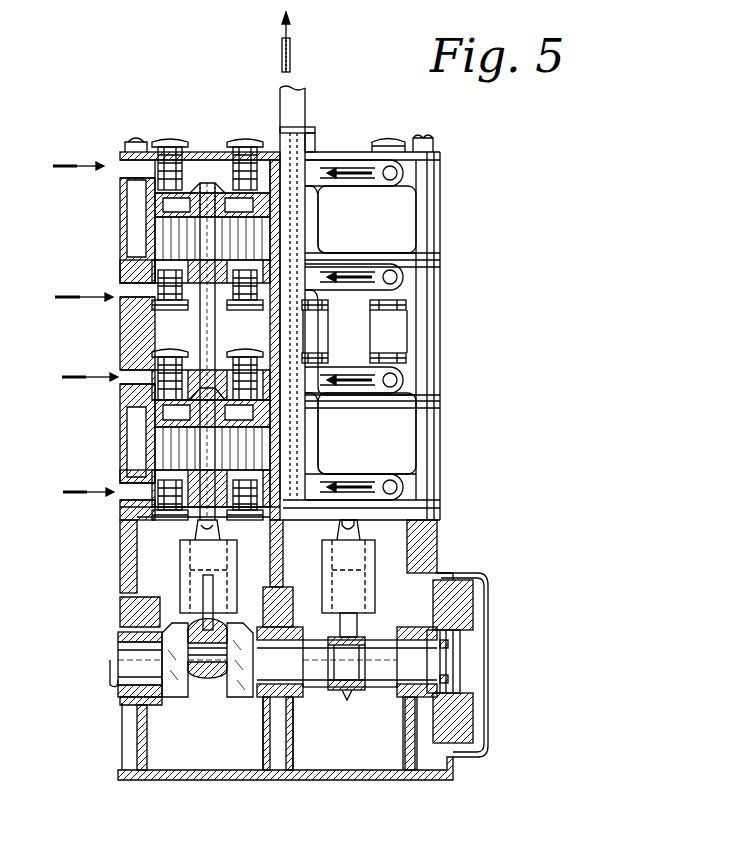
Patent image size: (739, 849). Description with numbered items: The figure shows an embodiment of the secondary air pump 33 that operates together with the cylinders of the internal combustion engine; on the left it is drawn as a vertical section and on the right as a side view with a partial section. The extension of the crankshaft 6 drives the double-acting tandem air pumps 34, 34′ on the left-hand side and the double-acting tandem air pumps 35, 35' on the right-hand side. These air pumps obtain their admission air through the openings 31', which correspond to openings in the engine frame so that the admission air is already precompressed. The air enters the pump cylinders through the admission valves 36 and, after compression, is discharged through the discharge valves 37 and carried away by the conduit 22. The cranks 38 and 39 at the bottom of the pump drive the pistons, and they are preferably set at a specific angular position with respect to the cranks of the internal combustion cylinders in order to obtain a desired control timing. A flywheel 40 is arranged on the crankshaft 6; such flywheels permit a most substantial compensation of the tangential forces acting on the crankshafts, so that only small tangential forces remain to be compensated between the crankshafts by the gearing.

The conduit 22 is at (292, 106).
The openings 31' is at (90, 329).
The secondary air pump 33 is at (380, 224).
The double-acting tandem air pump 34 is at (178, 447).
The double-acting tandem air pump 34′ is at (167, 243).
The double-acting tandem air pump 35 is at (406, 433).
The double-acting tandem air pump 35' is at (408, 219).
The admission valves 36 is at (163, 140).
The discharge valves 37 is at (244, 140).
The crank 38 is at (182, 690).
The crank 39 is at (310, 677).
The flywheel 40 is at (482, 577).
The crankshaft 6 is at (133, 662).